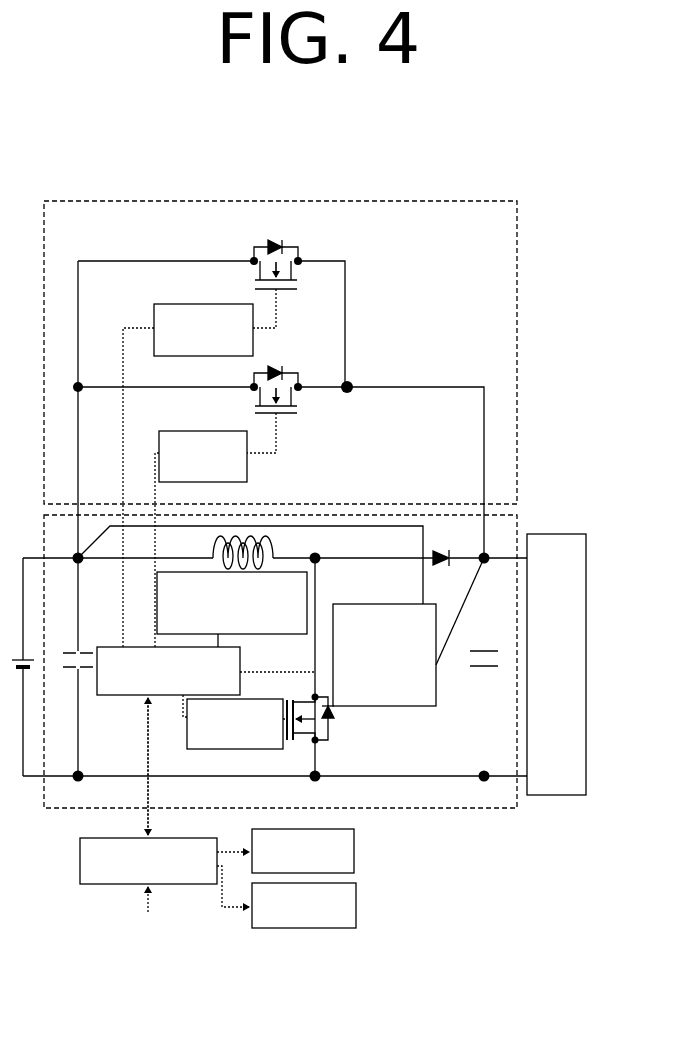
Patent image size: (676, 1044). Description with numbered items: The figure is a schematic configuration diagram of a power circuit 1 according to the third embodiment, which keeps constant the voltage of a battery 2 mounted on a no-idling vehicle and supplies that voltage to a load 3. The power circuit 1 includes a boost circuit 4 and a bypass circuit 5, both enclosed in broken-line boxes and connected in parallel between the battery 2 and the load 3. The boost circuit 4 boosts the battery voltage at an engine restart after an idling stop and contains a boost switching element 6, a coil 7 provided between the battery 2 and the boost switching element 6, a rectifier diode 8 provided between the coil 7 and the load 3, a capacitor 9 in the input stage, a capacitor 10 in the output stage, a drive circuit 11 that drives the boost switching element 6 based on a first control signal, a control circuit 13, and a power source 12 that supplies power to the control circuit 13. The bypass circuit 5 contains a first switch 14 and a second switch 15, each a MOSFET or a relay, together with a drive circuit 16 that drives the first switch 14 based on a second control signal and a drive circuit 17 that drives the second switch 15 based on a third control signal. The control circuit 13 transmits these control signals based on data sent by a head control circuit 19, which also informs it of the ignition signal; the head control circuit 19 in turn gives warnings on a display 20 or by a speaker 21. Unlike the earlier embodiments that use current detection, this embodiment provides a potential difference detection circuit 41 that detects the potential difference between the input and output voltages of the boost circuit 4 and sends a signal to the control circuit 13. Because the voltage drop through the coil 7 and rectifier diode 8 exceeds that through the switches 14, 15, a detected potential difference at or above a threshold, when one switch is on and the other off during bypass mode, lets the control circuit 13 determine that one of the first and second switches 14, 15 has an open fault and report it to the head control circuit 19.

The power circuit 1 is at (284, 192).
The battery 2 is at (20, 657).
The load 3 is at (557, 534).
The boost circuit 4 is at (462, 809).
The bypass circuit 5 is at (518, 354).
The boost switching element 6 is at (300, 742).
The coil 7 is at (273, 548).
The rectifier diode 8 is at (442, 551).
The capacitor 9 is at (76, 648).
The capacitor 10 is at (492, 645).
The drive circuit 11 is at (240, 749).
The power source 12 is at (283, 636).
The control circuit 13 is at (242, 663).
The first switch 14 is at (300, 274).
The second switch 15 is at (300, 400).
The drive circuit 16 is at (254, 345).
The drive circuit 17 is at (248, 472).
The head control circuit 19 is at (80, 858).
The display 20 is at (356, 853).
The speaker 21 is at (358, 908).
The potential difference detection circuit 41 is at (386, 708).